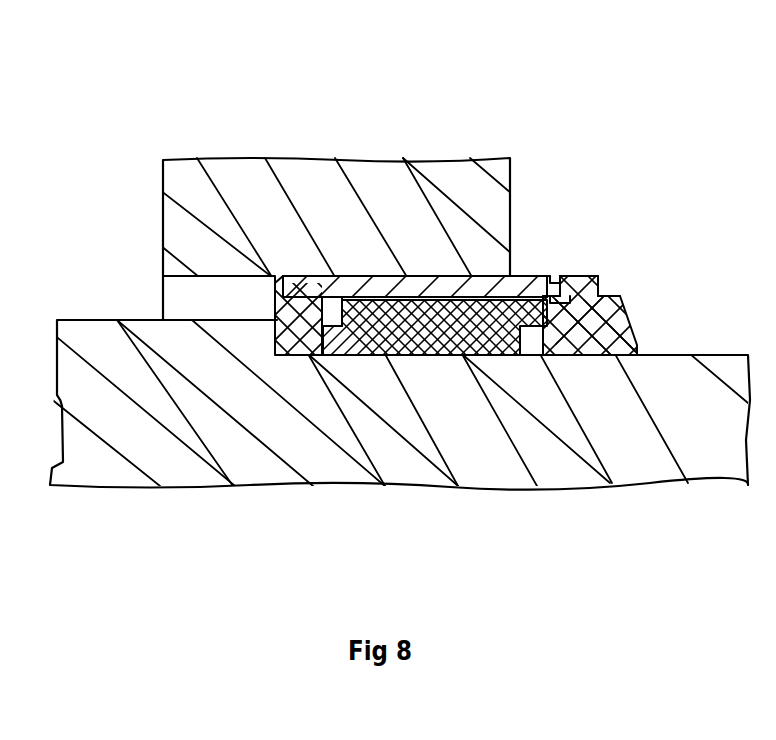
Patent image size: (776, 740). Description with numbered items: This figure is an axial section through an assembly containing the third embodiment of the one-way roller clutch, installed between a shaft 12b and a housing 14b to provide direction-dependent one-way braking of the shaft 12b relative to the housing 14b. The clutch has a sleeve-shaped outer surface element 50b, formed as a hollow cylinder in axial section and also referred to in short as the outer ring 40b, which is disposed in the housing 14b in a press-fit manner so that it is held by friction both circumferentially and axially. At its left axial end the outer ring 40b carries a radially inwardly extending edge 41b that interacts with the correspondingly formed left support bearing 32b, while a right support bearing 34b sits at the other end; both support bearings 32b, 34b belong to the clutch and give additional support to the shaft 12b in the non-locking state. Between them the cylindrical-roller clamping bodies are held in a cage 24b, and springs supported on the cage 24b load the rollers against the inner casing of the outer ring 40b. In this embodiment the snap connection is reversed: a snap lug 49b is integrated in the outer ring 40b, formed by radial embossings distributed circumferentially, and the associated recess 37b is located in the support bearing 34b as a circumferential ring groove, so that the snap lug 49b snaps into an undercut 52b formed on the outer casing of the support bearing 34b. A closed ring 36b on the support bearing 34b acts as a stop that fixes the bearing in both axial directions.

The shaft 12b is at (167, 397).
The housing 14b is at (197, 190).
The cage 24b is at (470, 357).
The left support bearing 32b is at (297, 352).
The right support bearing 34b is at (612, 328).
The ring 36b is at (598, 276).
The recess 37b is at (564, 300).
The outer ring 40b is at (364, 285).
The radially inwardly extending edge 41b is at (290, 298).
The snap lug 49b is at (563, 276).
The outer surface element 50b is at (364, 285).
The undercut 52b is at (551, 275).